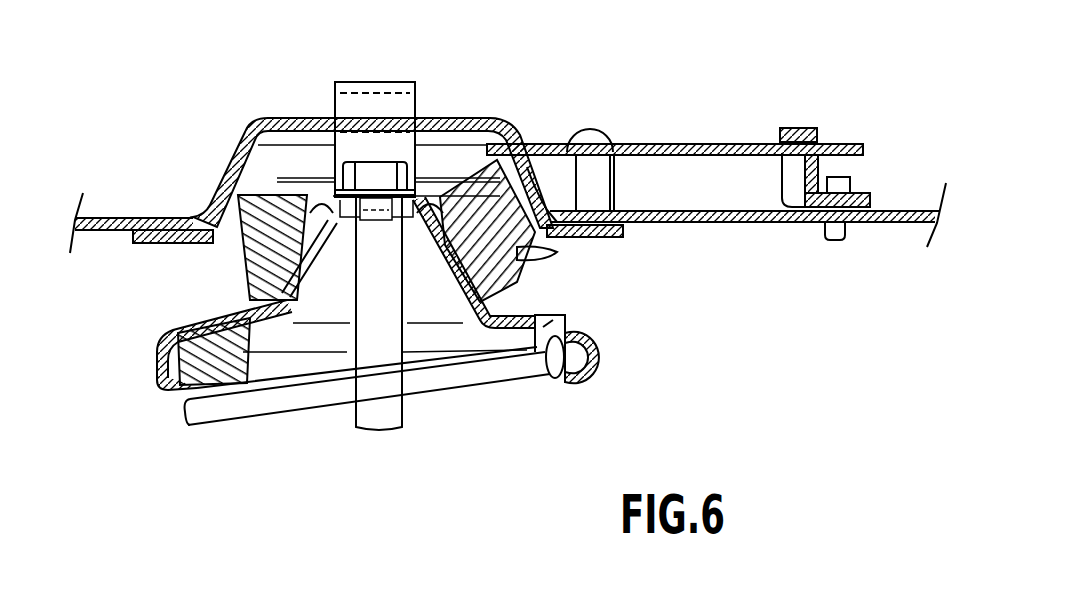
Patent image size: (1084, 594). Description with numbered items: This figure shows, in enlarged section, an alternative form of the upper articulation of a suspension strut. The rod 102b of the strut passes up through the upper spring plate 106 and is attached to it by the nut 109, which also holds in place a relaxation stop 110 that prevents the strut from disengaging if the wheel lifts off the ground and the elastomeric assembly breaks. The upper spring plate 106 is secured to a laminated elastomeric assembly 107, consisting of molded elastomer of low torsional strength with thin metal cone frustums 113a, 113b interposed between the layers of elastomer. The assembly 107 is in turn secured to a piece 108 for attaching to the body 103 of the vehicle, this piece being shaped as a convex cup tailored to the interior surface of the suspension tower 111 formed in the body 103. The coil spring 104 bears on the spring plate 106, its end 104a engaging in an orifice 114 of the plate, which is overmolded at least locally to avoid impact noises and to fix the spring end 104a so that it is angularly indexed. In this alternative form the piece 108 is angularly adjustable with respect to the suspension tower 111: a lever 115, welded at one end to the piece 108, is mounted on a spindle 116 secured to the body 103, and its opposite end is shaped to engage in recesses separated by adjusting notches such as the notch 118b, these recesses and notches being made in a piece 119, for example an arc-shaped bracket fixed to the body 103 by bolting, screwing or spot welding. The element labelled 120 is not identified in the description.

The rod 102b is at (370, 410).
The body 103 is at (887, 213).
The coil spring 104 is at (473, 365).
The end of the spring 104a is at (550, 323).
The upper spring plate 106 is at (600, 363).
The laminated elastomeric assembly 107 is at (238, 274).
The piece for attaching to the body 108 is at (160, 248).
The nut 109 is at (367, 170).
The relaxation stop 110 is at (386, 82).
The suspension tower 111 is at (217, 188).
The metal cone frustum 113a is at (480, 300).
The metal cone frustum 113b is at (517, 257).
The orifice 114 is at (550, 360).
The lever 115 is at (697, 142).
The spindle 116 is at (600, 178).
The adjusting notch 118b is at (807, 133).
The arc-shaped bracket 119 is at (860, 193).
The angle bracket 120 is at (853, 180).